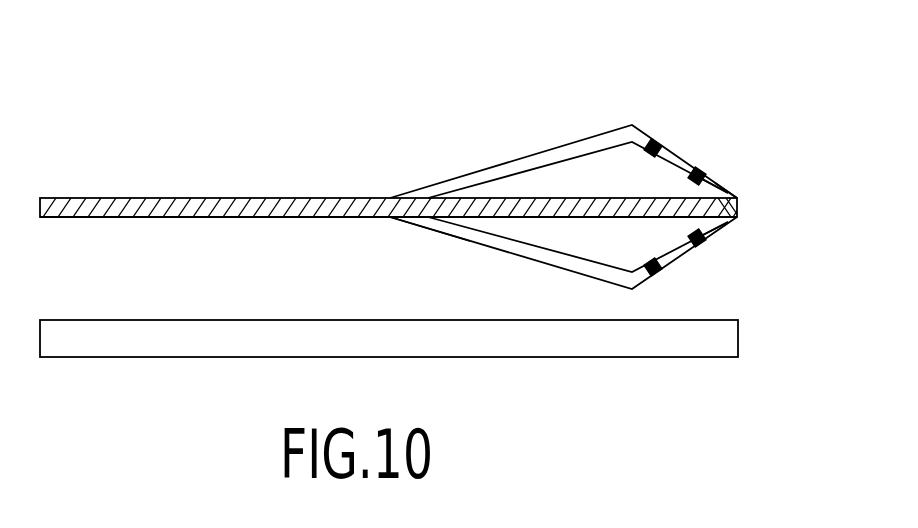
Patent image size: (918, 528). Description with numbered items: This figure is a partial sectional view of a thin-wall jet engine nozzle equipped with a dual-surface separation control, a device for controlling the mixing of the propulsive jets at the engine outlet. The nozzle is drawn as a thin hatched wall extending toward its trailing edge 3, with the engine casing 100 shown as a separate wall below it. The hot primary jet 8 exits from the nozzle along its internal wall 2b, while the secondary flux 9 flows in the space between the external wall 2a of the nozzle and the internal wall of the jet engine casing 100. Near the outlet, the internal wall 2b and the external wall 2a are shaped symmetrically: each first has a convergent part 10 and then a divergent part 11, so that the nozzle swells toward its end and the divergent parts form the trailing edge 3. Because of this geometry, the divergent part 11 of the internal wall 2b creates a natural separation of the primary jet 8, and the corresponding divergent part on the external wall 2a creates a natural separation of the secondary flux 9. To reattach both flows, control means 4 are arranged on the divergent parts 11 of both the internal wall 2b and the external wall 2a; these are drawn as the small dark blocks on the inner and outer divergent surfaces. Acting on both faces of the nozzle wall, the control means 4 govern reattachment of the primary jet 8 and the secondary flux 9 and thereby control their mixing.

The external wall 2a is at (93, 217).
The internal wall 2b is at (93, 198).
The trailing edge 3 is at (720, 182).
The control means 4 is at (698, 173).
The primary jet 8 is at (491, 177).
The secondary flux 9 is at (299, 279).
The convergent part 10 is at (500, 145).
The divergent part 11 is at (721, 151).
The casing 100 is at (75, 358).